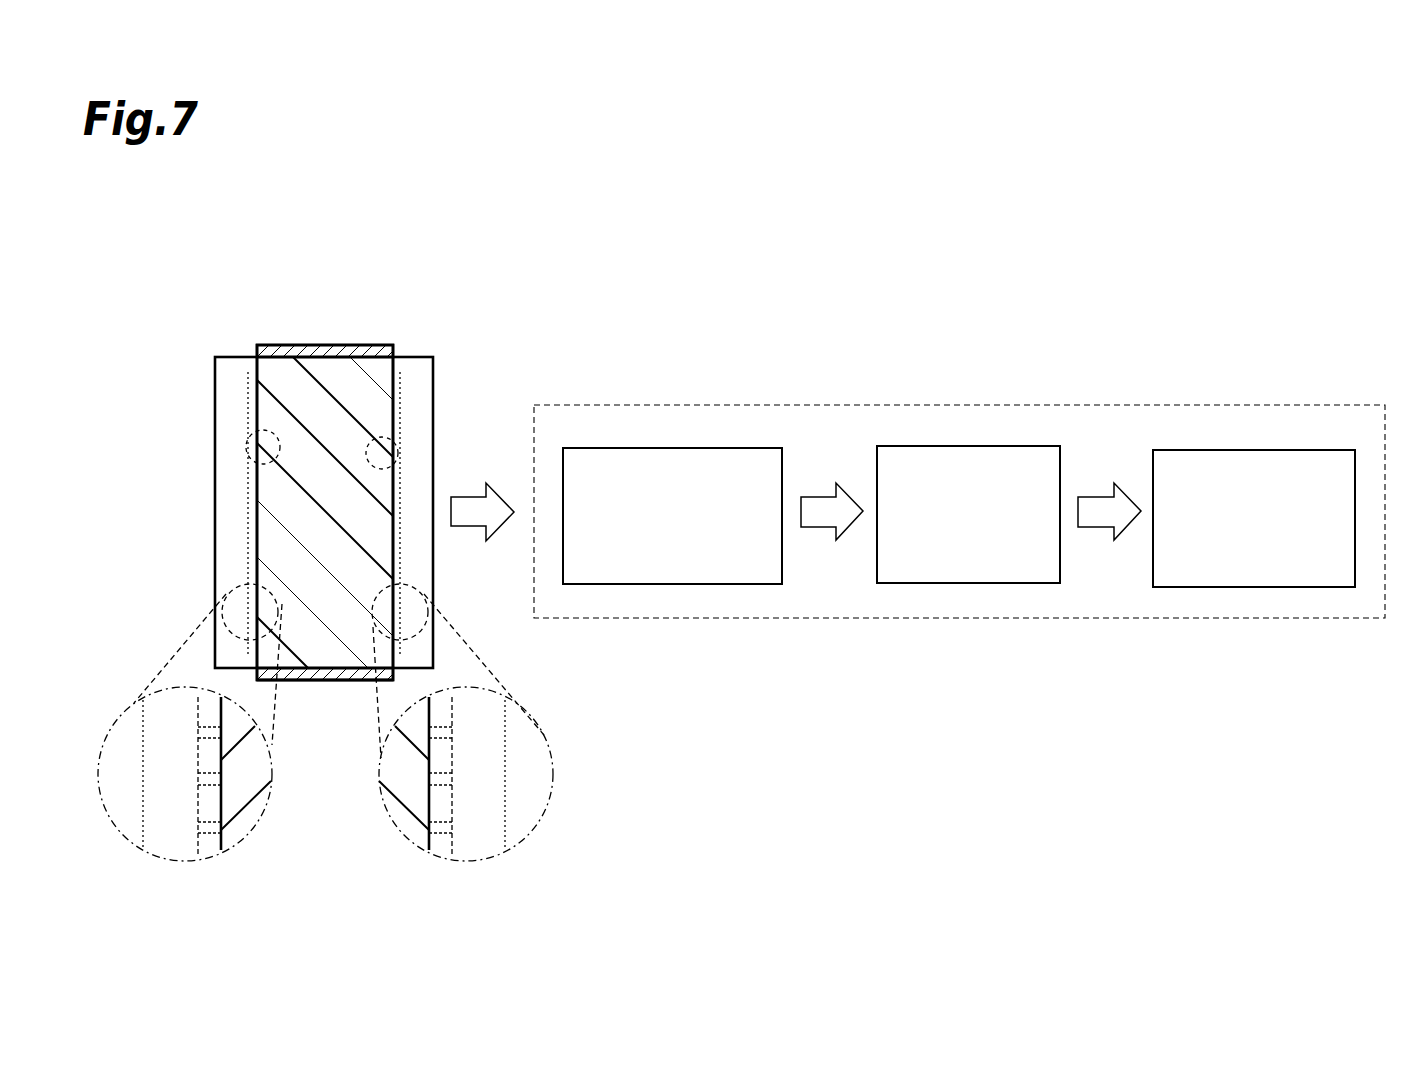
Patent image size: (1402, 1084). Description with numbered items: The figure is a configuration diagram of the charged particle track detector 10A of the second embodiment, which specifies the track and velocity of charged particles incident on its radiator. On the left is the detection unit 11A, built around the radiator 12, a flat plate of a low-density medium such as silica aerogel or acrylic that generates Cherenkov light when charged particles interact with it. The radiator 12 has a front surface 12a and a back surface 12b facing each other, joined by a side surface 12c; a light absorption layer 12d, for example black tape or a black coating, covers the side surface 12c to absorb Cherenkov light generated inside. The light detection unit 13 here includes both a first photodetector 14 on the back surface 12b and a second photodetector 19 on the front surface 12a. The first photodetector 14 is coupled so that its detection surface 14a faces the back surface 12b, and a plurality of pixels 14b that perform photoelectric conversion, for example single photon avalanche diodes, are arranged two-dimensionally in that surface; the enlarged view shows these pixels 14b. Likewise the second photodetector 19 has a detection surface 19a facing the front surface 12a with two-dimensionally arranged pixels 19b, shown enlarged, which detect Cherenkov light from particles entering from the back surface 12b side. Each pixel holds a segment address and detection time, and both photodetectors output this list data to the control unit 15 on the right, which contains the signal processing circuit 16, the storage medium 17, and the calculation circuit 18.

The charged particle track detector 10A is at (1224, 254).
The detection unit 11A is at (442, 249).
The radiator 12 is at (335, 372).
The front surface 12a is at (255, 512).
The back surface 12b is at (393, 397).
The side surface 12c is at (302, 672).
The light absorption layer 12d is at (277, 343).
The light detection unit 13 is at (324, 512).
The first photodetector 14 is at (433, 352).
The detection surface 14a is at (405, 435).
The pixels 14b is at (457, 802).
The control unit 15 is at (978, 405).
The signal processing circuit 16 is at (663, 585).
The storage medium 17 is at (963, 585).
The calculation circuit 18 is at (1251, 589).
The second photodetector 19 is at (222, 351).
The detection surface 19a is at (250, 430).
The pixels 19b is at (198, 802).